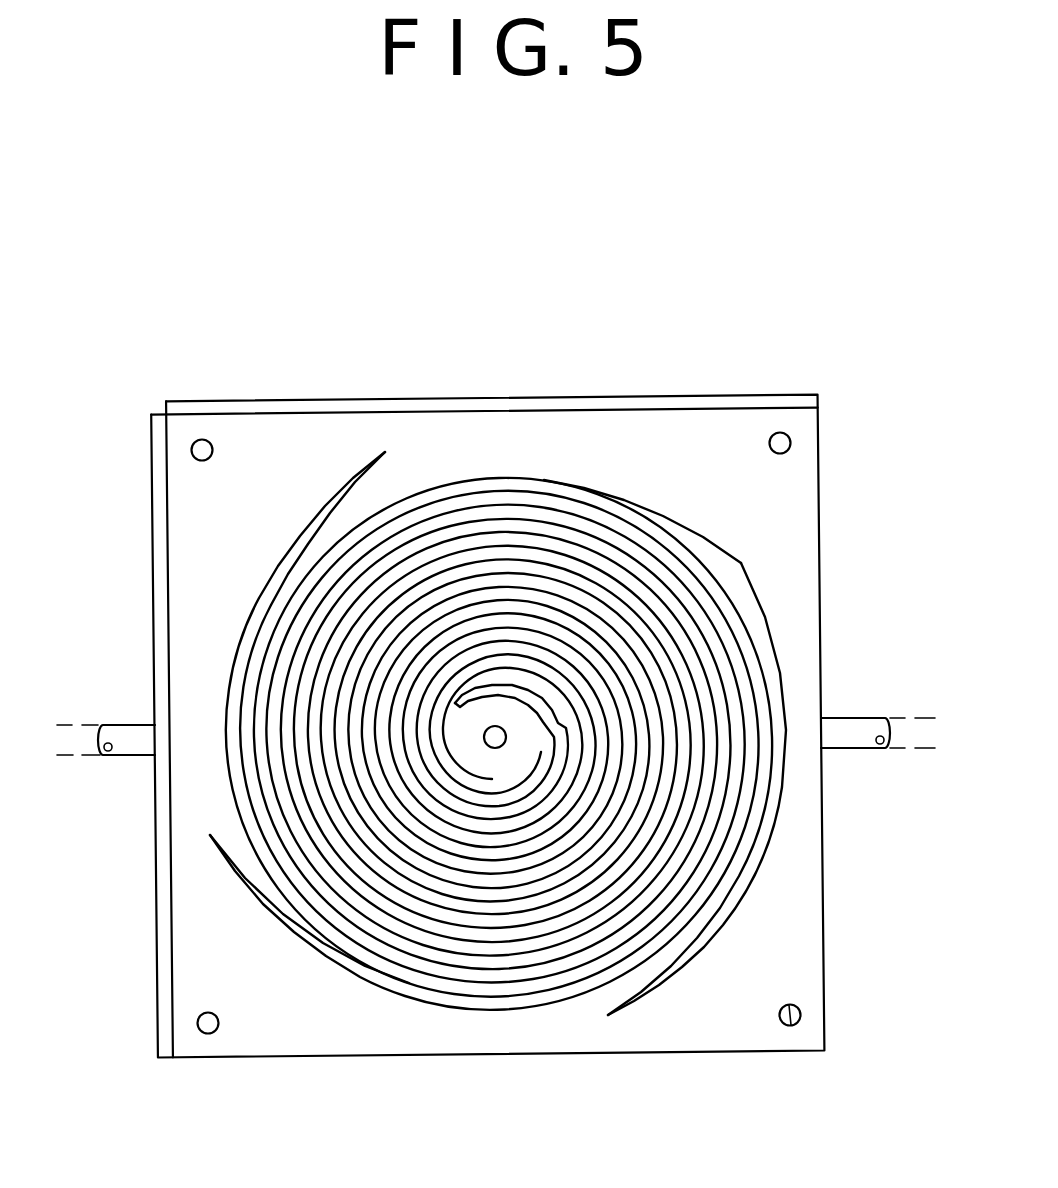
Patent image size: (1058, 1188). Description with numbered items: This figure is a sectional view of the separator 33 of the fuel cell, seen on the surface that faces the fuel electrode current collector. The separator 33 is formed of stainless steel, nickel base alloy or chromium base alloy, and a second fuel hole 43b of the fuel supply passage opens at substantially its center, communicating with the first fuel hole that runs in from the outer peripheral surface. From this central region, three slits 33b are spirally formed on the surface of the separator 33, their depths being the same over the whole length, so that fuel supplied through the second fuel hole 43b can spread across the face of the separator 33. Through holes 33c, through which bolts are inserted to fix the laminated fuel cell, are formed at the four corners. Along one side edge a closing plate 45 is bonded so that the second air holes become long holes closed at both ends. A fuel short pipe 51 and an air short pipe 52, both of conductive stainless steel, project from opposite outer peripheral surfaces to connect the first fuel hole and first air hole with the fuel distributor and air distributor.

The separator 33 is at (832, 500).
The slits 33b is at (768, 868).
The through holes 33c is at (793, 441).
The second fuel hole 43b is at (497, 725).
The closing plate 45 is at (590, 398).
The fuel short pipes 51 is at (880, 719).
The air short pipes 52 is at (123, 725).